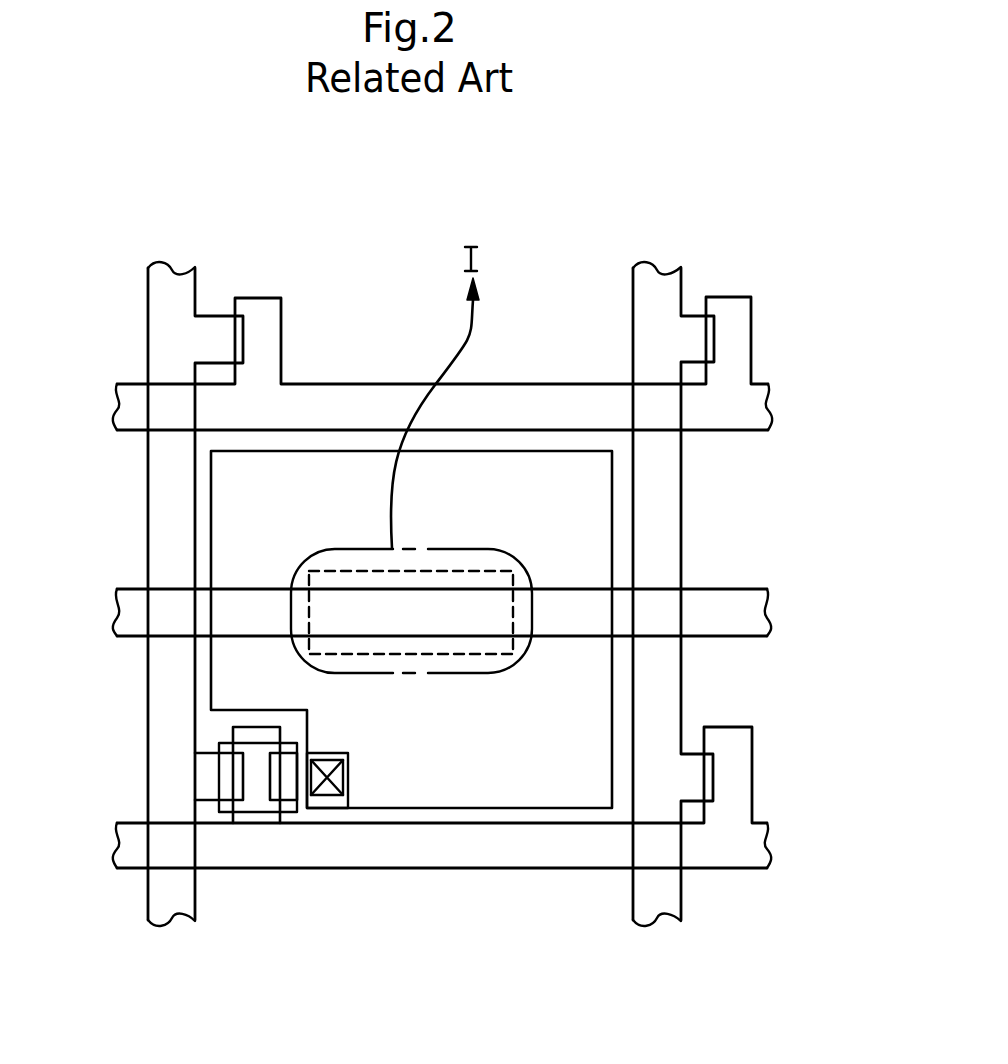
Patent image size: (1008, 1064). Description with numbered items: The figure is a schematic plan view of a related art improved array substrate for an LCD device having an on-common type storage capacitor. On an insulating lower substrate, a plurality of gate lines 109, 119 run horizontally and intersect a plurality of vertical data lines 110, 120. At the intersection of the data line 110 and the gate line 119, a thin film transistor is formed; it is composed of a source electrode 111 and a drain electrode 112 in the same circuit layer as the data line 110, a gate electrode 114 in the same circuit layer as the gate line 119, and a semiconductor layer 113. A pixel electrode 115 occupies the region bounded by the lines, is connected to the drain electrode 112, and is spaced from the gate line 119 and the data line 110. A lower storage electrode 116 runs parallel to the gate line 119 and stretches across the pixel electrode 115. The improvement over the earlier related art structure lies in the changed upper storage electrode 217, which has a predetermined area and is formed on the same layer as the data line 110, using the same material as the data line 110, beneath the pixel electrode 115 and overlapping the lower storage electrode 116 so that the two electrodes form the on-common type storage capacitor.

The gate line 109 is at (747, 406).
The data line 110 is at (170, 907).
The source electrode 111 is at (240, 797).
The drain electrode 112 is at (290, 790).
The semiconductor layer 113 is at (219, 743).
The gate electrode 114 is at (247, 730).
The pixel electrode 115 is at (602, 539).
The lower storage electrode 116 is at (743, 614).
The gate line 119 is at (728, 844).
The data line 120 is at (657, 913).
The upper storage electrode 217 is at (450, 655).